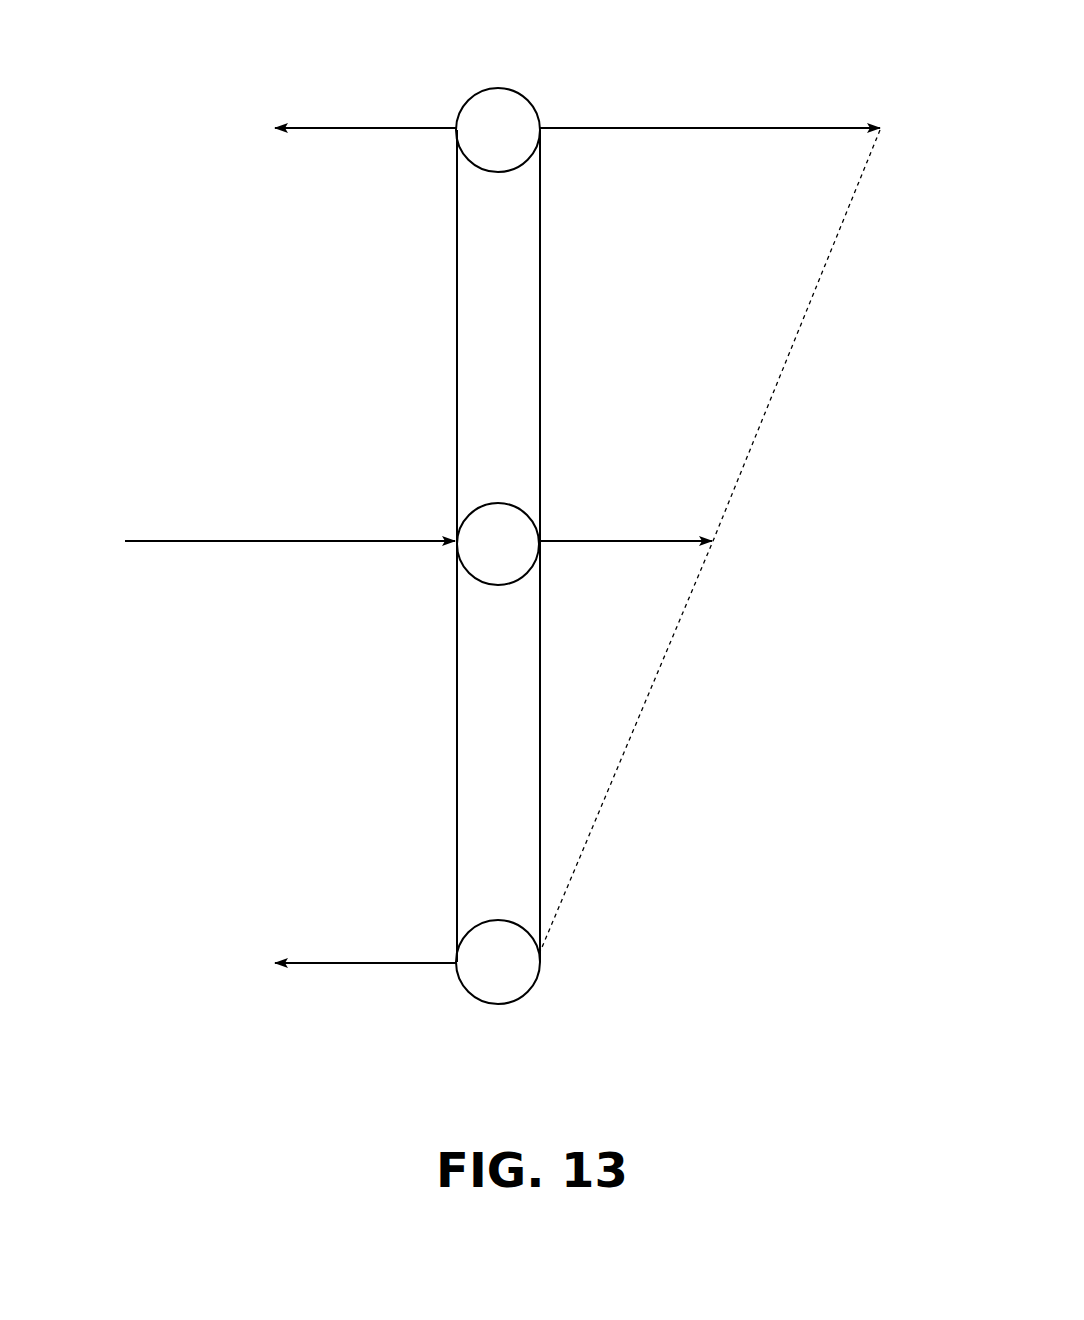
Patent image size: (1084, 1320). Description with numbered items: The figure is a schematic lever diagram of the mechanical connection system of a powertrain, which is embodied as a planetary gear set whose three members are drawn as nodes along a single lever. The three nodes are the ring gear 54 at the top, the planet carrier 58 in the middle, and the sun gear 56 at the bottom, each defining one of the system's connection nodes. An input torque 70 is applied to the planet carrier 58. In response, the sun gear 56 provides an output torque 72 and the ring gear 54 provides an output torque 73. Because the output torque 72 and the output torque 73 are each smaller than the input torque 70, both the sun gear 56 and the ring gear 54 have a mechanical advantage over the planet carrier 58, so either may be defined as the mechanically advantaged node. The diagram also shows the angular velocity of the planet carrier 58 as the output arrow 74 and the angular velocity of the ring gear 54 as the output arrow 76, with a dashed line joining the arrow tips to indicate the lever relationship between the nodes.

The ring gear 54 is at (482, 104).
The sun gear 56 is at (482, 977).
The planet carrier 58 is at (485, 568).
The input torque 70 is at (325, 541).
The output torque 72 is at (348, 963).
The output torque 73 is at (344, 128).
The output arrow 74 is at (604, 541).
The output arrow 76 is at (625, 128).